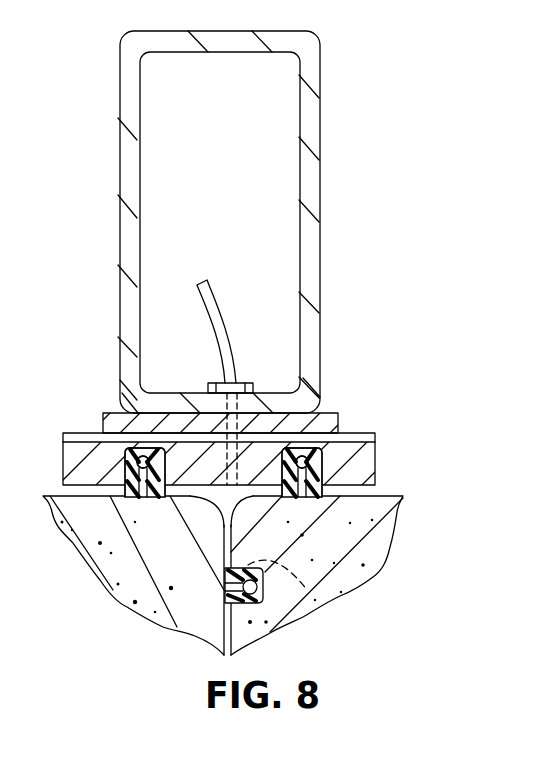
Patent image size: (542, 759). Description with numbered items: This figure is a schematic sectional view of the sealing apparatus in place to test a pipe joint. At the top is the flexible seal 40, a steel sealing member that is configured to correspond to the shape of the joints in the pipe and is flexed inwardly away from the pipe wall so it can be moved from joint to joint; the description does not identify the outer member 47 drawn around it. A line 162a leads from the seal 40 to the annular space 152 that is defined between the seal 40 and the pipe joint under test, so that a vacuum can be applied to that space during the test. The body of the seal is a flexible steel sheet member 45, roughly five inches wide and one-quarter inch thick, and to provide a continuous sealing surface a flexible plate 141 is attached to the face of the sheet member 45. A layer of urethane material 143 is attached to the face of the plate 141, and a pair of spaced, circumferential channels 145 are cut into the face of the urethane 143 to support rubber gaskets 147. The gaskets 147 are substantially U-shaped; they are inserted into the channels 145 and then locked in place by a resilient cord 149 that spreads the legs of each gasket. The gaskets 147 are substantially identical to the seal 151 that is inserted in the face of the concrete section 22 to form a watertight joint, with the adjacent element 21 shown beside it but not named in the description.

The housing 47 is at (316, 54).
The flexible seal 40 is at (157, 264).
The line 162a is at (227, 312).
The resilient cord 149 is at (142, 456).
The rubber gasket 147 is at (127, 468).
The circumferential channel 145 is at (126, 475).
The flexible steel sheet member 45 is at (338, 412).
The flexible plate 141 is at (362, 434).
The urethane material 143 is at (372, 467).
The annular space 152 is at (207, 503).
The seal 151 is at (314, 612).
The concrete section 22 is at (116, 602).
The support member 21 is at (320, 598).